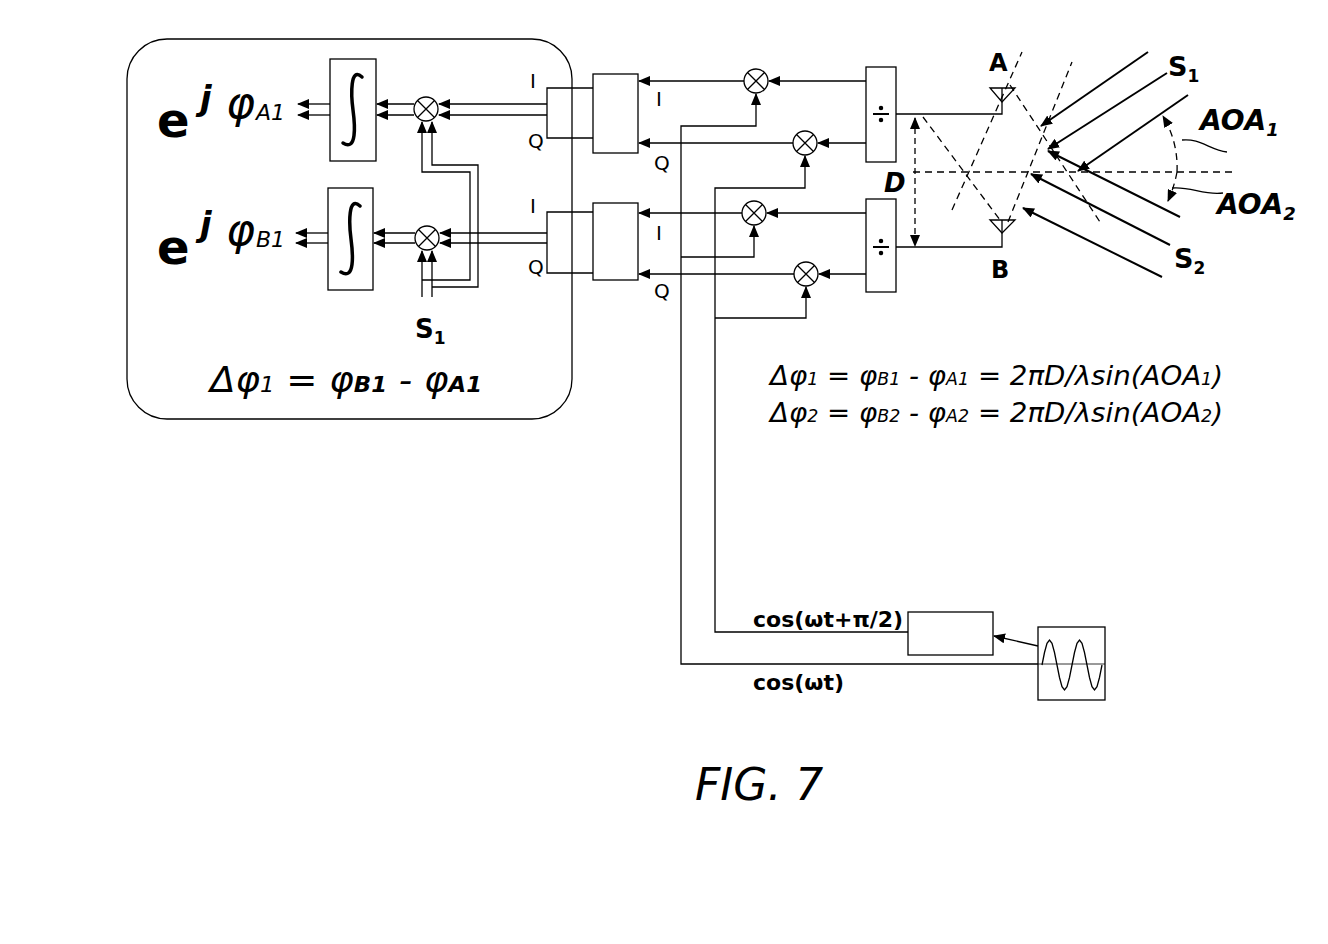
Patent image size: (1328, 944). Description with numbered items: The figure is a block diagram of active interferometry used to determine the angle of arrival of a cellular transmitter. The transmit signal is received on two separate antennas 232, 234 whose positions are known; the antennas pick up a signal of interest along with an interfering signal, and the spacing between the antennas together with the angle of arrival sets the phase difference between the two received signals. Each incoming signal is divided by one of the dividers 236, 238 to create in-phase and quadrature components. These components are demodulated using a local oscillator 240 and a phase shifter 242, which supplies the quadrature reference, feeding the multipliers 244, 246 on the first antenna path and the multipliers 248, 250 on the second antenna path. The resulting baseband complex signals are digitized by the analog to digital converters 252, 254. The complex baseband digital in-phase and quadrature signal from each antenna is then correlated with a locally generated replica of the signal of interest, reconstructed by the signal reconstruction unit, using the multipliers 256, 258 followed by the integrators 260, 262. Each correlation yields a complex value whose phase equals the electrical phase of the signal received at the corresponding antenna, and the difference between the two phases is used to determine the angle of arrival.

The antenna 232 is at (990, 97).
The antenna 234 is at (1015, 225).
The divider 236 is at (876, 67).
The divider 238 is at (896, 282).
The local oscillator 240 is at (1105, 640).
The phase shifter 242 is at (948, 612).
The multiplier 244 is at (762, 59).
The multiplier 246 is at (805, 131).
The multiplier 248 is at (766, 222).
The multiplier 250 is at (815, 287).
The analog to digital converter 252 is at (612, 73).
The analog to digital converter 254 is at (618, 281).
The multiplier 256 is at (434, 97).
The multiplier 258 is at (430, 226).
The integrator 260 is at (330, 146).
The integrator 262 is at (328, 275).